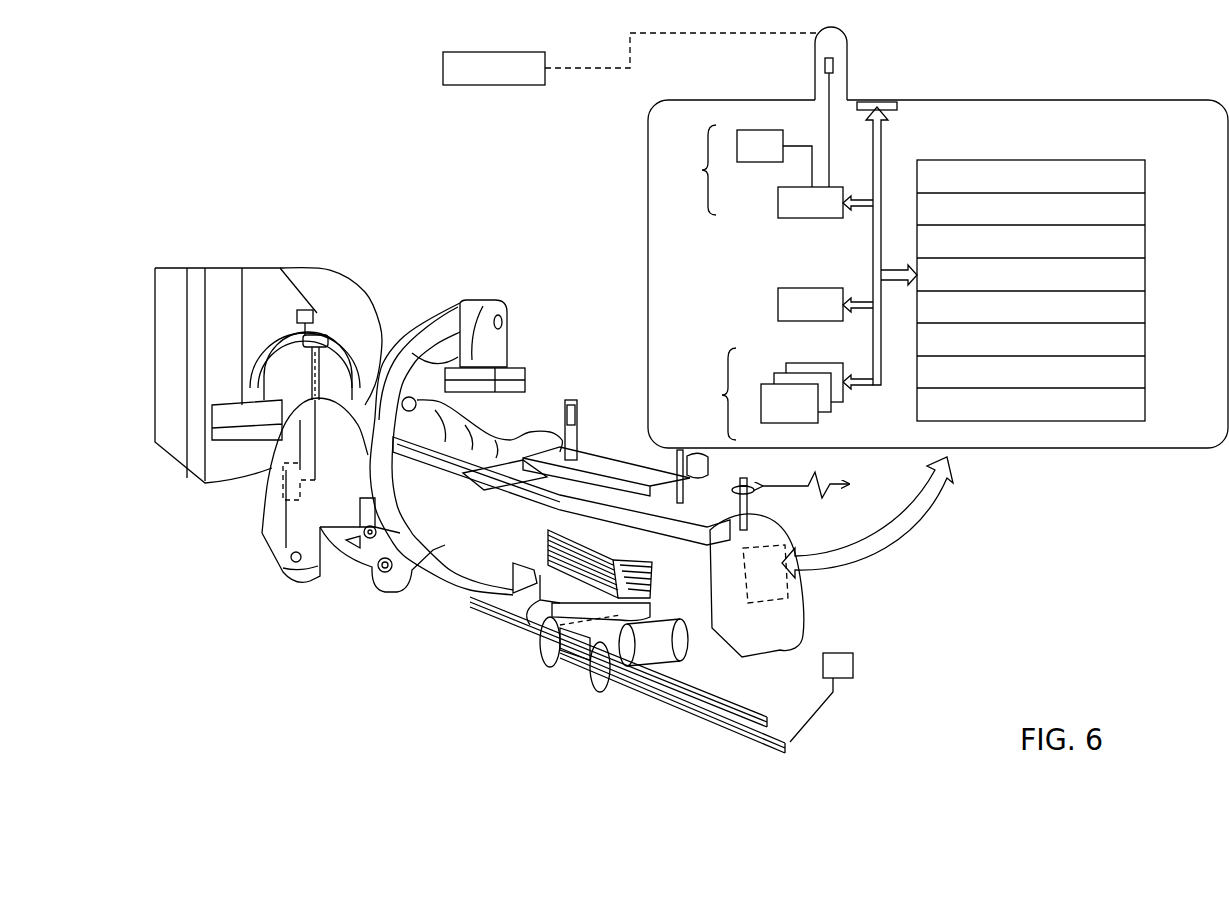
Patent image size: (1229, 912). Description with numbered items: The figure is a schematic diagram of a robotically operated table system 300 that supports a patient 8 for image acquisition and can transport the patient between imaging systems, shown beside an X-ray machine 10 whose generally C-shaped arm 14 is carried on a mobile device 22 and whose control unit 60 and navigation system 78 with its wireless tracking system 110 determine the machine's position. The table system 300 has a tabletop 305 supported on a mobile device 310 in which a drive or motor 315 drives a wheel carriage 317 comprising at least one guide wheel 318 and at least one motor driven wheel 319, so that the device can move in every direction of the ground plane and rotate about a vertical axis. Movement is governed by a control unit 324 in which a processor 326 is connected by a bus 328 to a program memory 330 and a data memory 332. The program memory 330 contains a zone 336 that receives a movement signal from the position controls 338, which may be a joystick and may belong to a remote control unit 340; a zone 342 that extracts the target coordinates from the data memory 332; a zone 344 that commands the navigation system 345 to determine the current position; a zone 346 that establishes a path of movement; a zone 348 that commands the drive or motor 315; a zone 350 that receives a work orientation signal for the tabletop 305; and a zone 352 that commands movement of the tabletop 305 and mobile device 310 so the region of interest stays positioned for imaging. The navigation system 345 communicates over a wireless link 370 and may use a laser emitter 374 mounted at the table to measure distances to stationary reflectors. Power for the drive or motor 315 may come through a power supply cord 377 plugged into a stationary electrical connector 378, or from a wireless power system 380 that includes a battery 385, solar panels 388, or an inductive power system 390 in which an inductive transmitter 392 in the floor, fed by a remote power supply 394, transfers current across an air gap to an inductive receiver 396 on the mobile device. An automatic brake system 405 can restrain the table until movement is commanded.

The patient 8 is at (432, 443).
The X-ray machine 10 is at (392, 442).
The arm 14 is at (440, 298).
The mobile device 22 is at (347, 588).
The control unit 60 is at (257, 495).
The navigation system 78 is at (306, 495).
The wireless communication or tracking system 110 is at (330, 352).
The table system 300 is at (673, 590).
The tabletop 305 is at (451, 459).
The mobile device 310 is at (603, 671).
The drive or motor 315 is at (684, 656).
The wheel carriage 317 is at (615, 688).
The guide wheel 318 is at (540, 658).
The motor driven wheel 319 is at (600, 693).
The control unit 324 is at (1044, 100).
The processor 326 is at (778, 305).
The bus 328 is at (873, 392).
The program memory 330 is at (1065, 424).
The data memory 332 is at (763, 394).
The zone of instruction code 336 is at (1145, 176).
The position controls 338 is at (745, 162).
The remote control unit 340 is at (494, 85).
The zone 342 is at (726, 35).
The zone of instruction code 344 is at (1145, 242).
The navigation system 345 is at (691, 170).
The zone 346 is at (1145, 274).
The zone 348 is at (1145, 307).
The zone 350 is at (1145, 340).
The zone 352 is at (1145, 372).
The wireless link 370 is at (836, 500).
The laser emitter 374 is at (753, 475).
The electrical power supply cord 377 is at (595, 746).
The stationary electrical connector 378 is at (577, 758).
The wireless power system 380 is at (645, 718).
The battery 385 is at (558, 627).
The solar cells or panels 388 is at (735, 636).
The inductive power system 390 is at (857, 669).
The inductive transmitter 392 is at (746, 706).
The power supply 394 is at (853, 663).
The inductive receiver 396 is at (655, 684).
The automatic brake system 405 is at (575, 668).